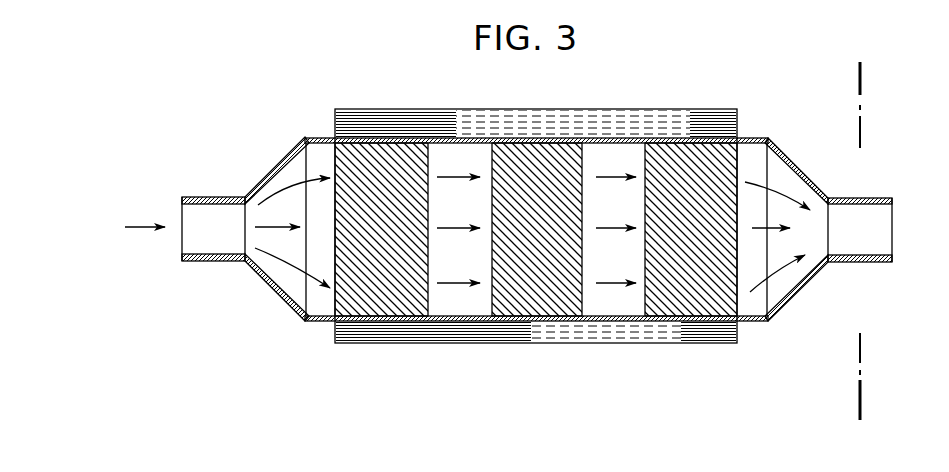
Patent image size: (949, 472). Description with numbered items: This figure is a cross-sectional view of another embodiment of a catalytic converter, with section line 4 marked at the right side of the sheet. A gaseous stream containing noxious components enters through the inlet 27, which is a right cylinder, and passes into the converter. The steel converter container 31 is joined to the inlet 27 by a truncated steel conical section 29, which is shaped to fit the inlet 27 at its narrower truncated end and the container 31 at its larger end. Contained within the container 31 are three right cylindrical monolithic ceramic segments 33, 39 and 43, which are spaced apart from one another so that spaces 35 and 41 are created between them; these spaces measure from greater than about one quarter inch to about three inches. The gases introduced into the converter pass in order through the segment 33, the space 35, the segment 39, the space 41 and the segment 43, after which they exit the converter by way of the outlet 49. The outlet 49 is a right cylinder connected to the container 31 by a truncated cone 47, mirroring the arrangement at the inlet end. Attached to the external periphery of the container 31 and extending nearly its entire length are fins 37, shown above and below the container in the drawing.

The section line 4- 4 is at (863, 78).
The inlet 27 is at (203, 196).
The truncated steel conical section 29 is at (283, 160).
The steel converter container 31 is at (319, 135).
The right cylindrical monolithic ceramic segment 33 is at (390, 160).
The space 35 is at (462, 303).
The fins 37 is at (522, 122).
The right cylindrical monolithic ceramic segment 39 is at (573, 150).
The space 41 is at (618, 303).
The right cylindrical monolithic ceramic segment 43 is at (690, 160).
The truncated cone 47 is at (795, 301).
The outlet 49 is at (868, 198).